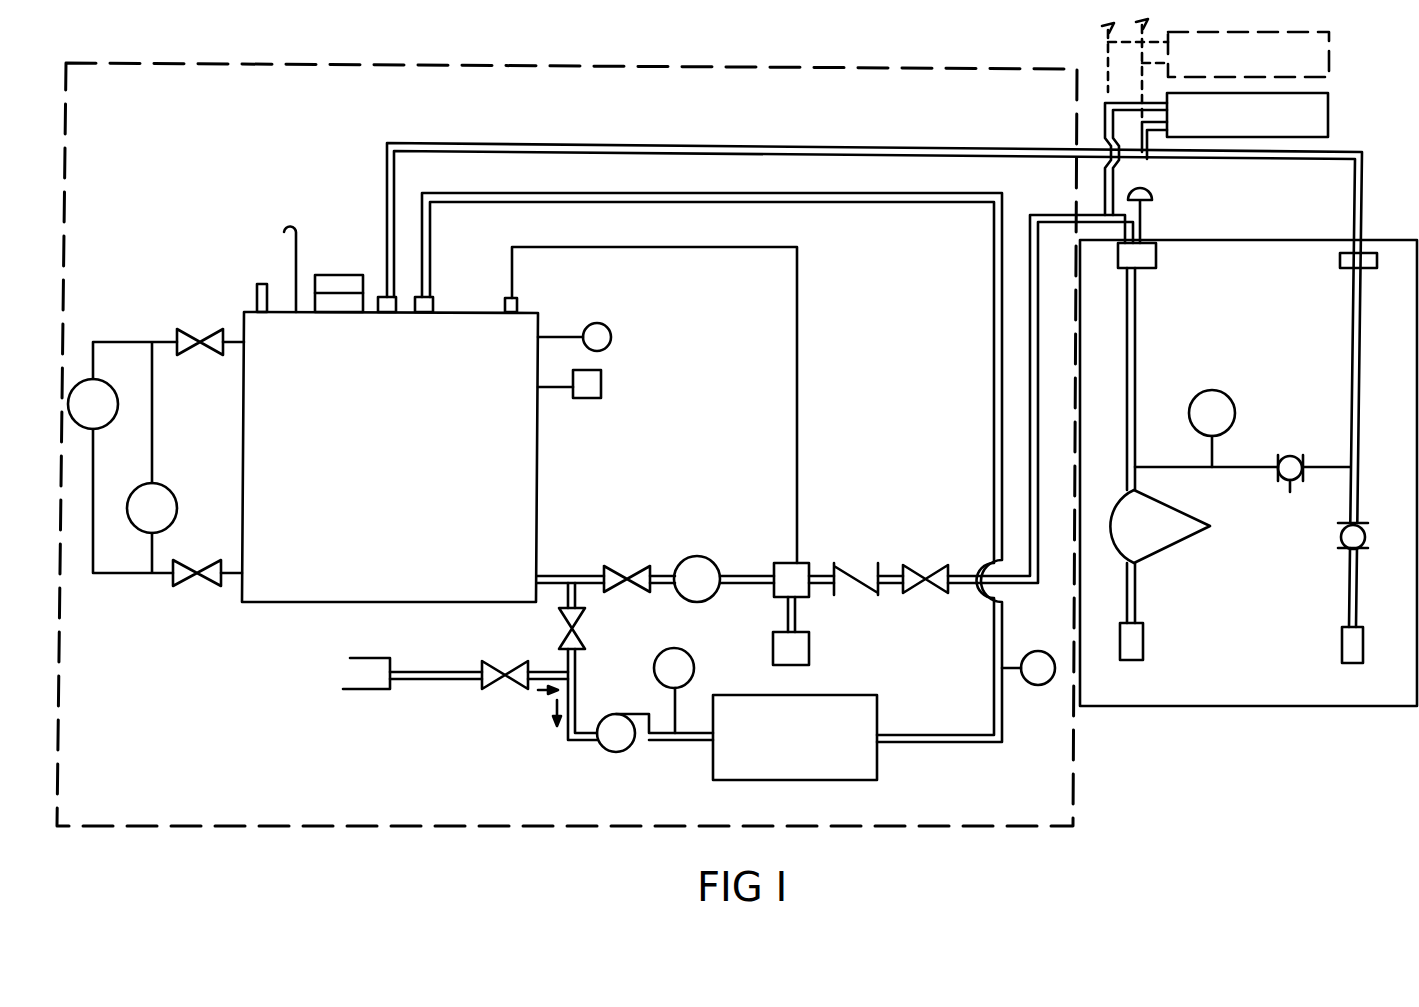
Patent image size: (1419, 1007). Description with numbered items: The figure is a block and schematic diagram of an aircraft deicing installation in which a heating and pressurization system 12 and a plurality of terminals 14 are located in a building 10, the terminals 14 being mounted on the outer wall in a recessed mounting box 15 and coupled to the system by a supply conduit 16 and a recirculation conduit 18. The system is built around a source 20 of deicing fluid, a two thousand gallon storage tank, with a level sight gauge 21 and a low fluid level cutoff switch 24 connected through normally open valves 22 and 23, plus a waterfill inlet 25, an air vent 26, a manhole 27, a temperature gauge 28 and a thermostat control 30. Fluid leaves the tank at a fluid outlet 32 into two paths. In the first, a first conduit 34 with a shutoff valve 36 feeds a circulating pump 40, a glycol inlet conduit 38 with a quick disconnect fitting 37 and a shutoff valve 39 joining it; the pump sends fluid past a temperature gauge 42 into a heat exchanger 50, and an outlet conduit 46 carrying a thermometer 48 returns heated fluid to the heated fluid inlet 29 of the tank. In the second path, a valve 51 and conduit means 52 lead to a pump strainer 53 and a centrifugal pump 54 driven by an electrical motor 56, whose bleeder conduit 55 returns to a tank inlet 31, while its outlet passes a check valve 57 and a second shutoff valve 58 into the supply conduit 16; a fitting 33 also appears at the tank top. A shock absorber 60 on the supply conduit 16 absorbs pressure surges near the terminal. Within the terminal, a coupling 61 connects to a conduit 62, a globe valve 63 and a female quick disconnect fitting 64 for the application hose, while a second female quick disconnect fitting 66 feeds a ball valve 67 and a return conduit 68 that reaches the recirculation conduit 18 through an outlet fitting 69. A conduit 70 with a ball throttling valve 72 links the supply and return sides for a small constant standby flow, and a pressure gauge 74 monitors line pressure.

The building 10 is at (183, 826).
The heating and pressurization system 12 is at (458, 722).
The terminals 14 is at (1320, 107).
The recessed mounting box 15 is at (1362, 708).
The supply conduit 16 is at (1057, 214).
The recirculation conduit 18 is at (971, 147).
The source of deicing fluid 20 is at (315, 593).
The level sight gauge 21 is at (112, 414).
The valve 22 is at (188, 330).
The valve 23 is at (210, 577).
The low fluid level cutoff switch 24 is at (165, 493).
The waterfill inlet 25 is at (258, 296).
The air vent 26 is at (287, 225).
The manhole 27 is at (335, 280).
The temperature gauge 28 is at (610, 327).
The heated fluid inlet 29 is at (428, 300).
The thermostat control 30 is at (601, 384).
The tank inlet 31 is at (513, 305).
The fluid outlet 32 is at (552, 572).
The conduit fitting 33 is at (392, 300).
The first conduit 34 is at (577, 667).
The shutoff valve 36 is at (581, 614).
The quick disconnect fitting 37 is at (368, 658).
The glycol inlet conduit 38 is at (423, 672).
The shutoff valve 39 is at (493, 665).
The circulating pump 40 is at (607, 727).
The temperature gauge 42 is at (689, 655).
The outlet conduit 46 is at (877, 207).
The thermometer 48 is at (1038, 685).
The heat exchanger 50 is at (862, 704).
The valve 51 is at (612, 565).
The conduit means 52 is at (663, 573).
The pump strainer 53 is at (694, 556).
The centrifugal pump 54 is at (799, 570).
The conduit 55 is at (685, 250).
The electrical motor 56 is at (808, 641).
The check valve 57 is at (845, 562).
The second shutoff valve 58 is at (938, 577).
The shock absorber 60 is at (1152, 191).
The coupling 61 is at (1150, 260).
The conduit 62 is at (1130, 418).
The globe valve 63 is at (1188, 512).
The female quick disconnect fitting 64 is at (1143, 628).
The second female quick disconnect fitting 66 is at (1342, 637).
The ball valve 67 is at (1362, 530).
The return conduit 68 is at (1348, 410).
The outlet fitting 69 is at (1347, 266).
The conduit 70 is at (1163, 466).
The ball throttling valve 72 is at (1291, 487).
The pressure gauge 74 is at (1223, 402).